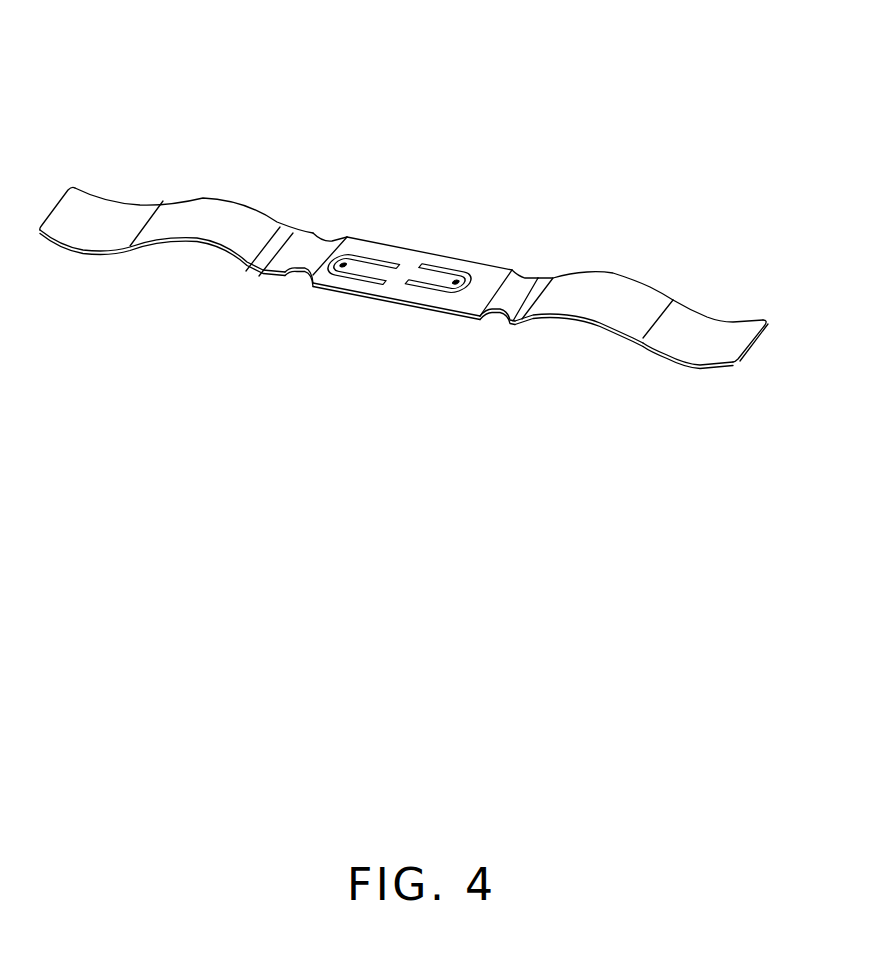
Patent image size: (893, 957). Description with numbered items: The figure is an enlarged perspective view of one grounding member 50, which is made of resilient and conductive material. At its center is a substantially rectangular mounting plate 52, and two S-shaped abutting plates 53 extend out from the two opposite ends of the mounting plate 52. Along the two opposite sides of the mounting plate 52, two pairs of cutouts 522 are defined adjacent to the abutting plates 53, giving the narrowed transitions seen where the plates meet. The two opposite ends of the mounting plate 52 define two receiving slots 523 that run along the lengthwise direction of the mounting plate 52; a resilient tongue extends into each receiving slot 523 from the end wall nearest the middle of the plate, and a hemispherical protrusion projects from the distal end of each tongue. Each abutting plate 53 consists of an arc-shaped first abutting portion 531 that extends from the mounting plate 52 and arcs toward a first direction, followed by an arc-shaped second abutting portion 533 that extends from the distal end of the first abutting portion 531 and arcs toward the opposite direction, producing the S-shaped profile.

The grounding member 50 is at (233, 58).
The mounting plate 52 is at (418, 262).
The cutouts 522 is at (525, 268).
The receiving slots 523 is at (333, 292).
The abutting plate 53 is at (767, 242).
The first abutting portion 531 is at (590, 292).
The second abutting portion 533 is at (700, 338).